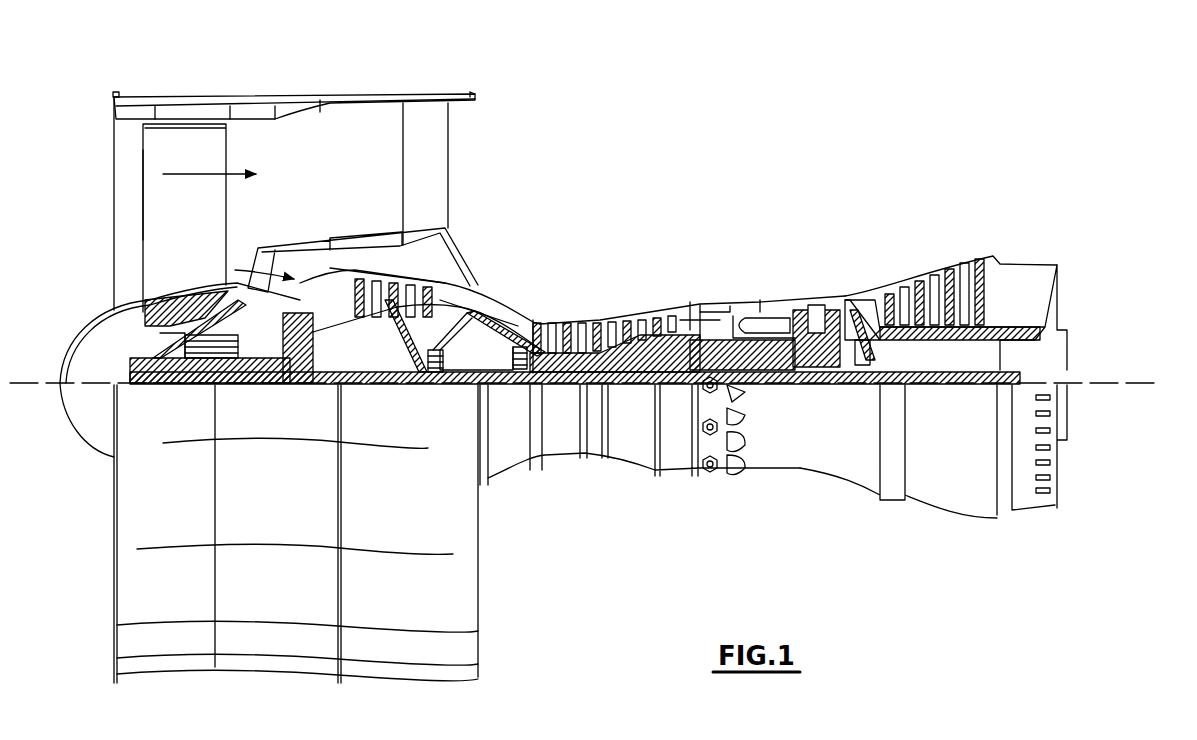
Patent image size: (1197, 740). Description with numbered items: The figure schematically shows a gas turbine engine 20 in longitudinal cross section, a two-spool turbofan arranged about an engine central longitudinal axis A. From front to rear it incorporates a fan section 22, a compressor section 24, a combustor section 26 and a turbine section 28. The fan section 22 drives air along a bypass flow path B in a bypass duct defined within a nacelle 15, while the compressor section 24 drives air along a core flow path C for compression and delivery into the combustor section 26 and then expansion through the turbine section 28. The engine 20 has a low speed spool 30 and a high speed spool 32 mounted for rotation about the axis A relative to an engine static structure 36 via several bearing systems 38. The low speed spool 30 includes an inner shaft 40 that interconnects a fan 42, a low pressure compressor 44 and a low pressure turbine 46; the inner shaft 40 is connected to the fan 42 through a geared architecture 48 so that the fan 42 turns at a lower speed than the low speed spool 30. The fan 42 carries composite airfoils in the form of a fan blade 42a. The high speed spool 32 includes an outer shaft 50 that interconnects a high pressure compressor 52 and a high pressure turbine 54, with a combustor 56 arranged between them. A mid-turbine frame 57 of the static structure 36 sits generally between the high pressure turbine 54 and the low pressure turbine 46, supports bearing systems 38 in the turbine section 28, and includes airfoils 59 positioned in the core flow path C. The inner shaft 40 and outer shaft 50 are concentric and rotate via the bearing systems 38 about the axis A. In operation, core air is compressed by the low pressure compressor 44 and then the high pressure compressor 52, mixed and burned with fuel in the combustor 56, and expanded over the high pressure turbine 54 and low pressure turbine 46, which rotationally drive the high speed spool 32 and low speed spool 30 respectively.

The nacelle 15 is at (297, 97).
The gas turbine engine 20 is at (756, 149).
The fan section 22 is at (295, 354).
The compressor section 24 is at (528, 292).
The combustor section 26 is at (750, 294).
The turbine section 28 is at (930, 349).
The low speed spool 30 is at (633, 392).
The high speed spool 32 is at (683, 320).
The engine static structure 36 is at (674, 474).
The bearing systems 38 is at (433, 385).
The inner shaft 40 is at (500, 386).
The fan 42 is at (199, 230).
The fan blade 42a is at (143, 205).
The low pressure compressor 44 is at (395, 292).
The low pressure turbine 46 is at (945, 270).
The geared architecture 48 is at (300, 385).
The outer shaft 50 is at (760, 386).
The high pressure compressor 52 is at (607, 352).
The high pressure turbine 54 is at (816, 302).
The combustor 56 is at (750, 327).
The mid-turbine frame 57 is at (857, 320).
The airfoils 59 is at (888, 345).
The engine central longitudinal axis A is at (1155, 376).
The bypass flow path B is at (200, 174).
The core flow path C is at (235, 270).